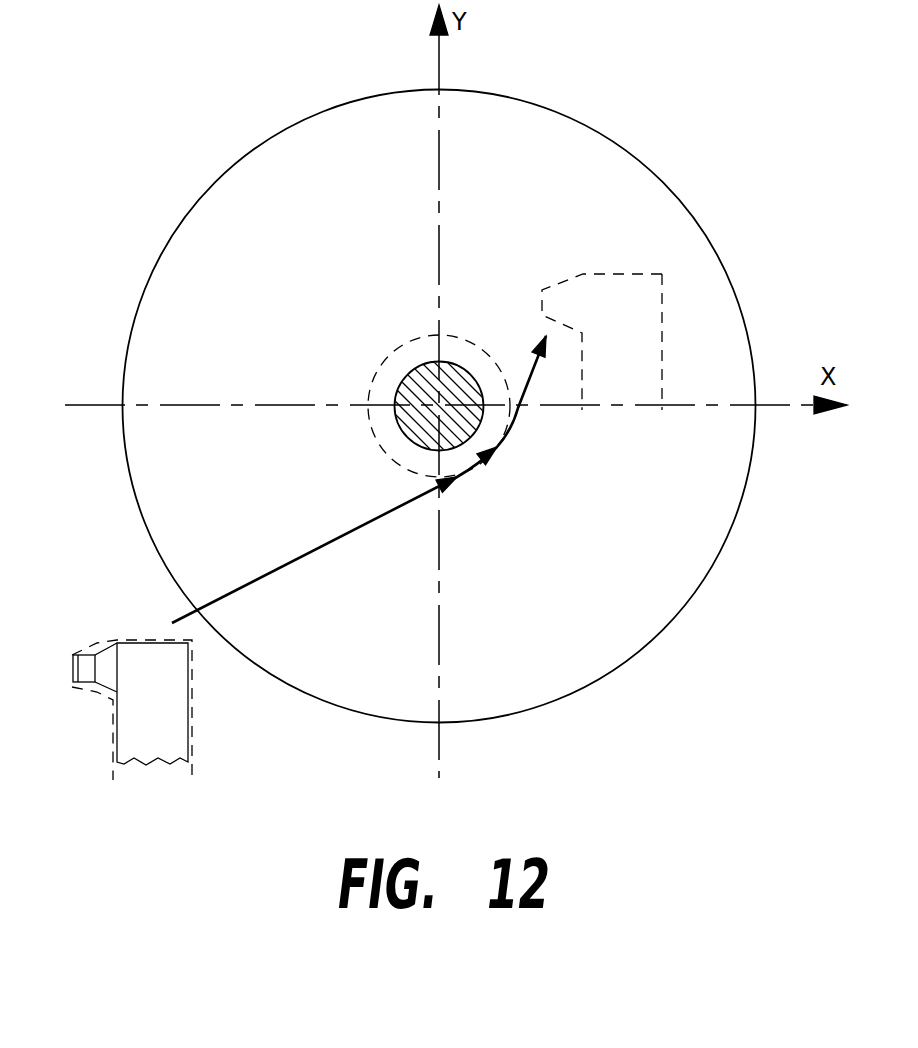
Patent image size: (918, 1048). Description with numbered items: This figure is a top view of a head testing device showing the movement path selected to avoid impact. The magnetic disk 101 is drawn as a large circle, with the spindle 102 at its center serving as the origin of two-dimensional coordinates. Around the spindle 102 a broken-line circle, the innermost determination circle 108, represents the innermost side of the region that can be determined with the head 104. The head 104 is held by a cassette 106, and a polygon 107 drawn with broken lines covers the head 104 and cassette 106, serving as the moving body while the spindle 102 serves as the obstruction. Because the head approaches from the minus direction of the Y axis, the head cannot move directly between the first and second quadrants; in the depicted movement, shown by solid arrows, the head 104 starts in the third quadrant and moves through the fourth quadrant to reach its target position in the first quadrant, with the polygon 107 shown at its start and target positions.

The magnetic disk 101 is at (607, 138).
The spindle 102 is at (398, 430).
The head 104 is at (87, 662).
The cassette 106 is at (143, 650).
The polygon 107 is at (663, 298).
The innermost determination circle 108 is at (405, 342).